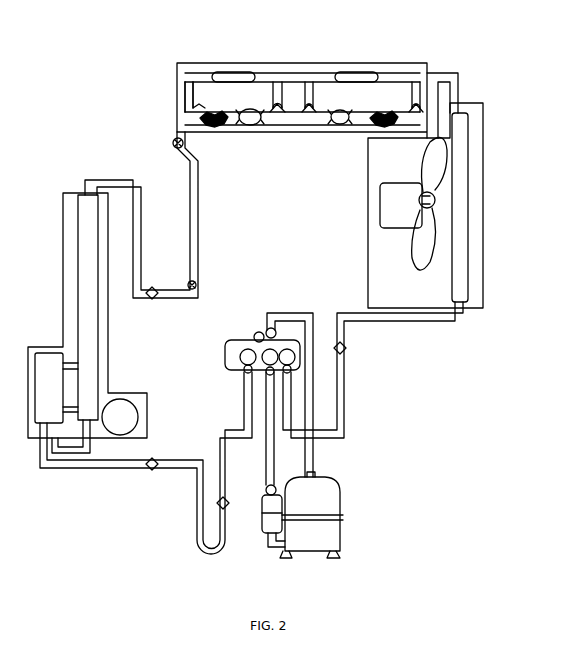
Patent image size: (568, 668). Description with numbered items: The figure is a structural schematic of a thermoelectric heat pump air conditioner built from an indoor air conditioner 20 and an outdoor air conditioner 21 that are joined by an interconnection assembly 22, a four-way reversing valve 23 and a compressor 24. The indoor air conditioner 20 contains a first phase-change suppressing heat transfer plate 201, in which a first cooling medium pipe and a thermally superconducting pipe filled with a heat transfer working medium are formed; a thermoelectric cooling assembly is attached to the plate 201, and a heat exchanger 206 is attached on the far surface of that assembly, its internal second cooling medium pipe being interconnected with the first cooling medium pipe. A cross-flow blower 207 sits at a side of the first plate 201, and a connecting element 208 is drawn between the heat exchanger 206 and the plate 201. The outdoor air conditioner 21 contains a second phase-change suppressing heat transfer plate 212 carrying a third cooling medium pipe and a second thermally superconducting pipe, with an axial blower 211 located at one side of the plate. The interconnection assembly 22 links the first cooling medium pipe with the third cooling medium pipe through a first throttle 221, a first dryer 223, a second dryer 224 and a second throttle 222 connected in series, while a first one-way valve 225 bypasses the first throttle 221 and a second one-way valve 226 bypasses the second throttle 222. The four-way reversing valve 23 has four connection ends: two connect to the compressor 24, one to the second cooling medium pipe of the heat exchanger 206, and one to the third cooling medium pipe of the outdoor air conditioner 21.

The indoor air conditioner 20 is at (63, 248).
The first phase-change suppressing heat transfer plate 201 is at (92, 268).
The heat exchanger 206 is at (45, 385).
The cross-flow blower 207 is at (120, 417).
The connecting pipe 208 is at (70, 388).
The outdoor air conditioner 21 is at (483, 182).
The axial blower 211 is at (400, 215).
The second phase-change suppressing heat transfer plate 212 is at (458, 213).
The interconnection assembly 22 is at (247, 63).
The first throttle 221 is at (205, 114).
The second throttle 222 is at (385, 114).
The first dryer 223 is at (250, 122).
The second dryer 224 is at (340, 111).
The first one-way valve 225 is at (213, 114).
The second one-way valve 226 is at (352, 82).
The four-way reversing valve 23 is at (233, 357).
The compressor 24 is at (318, 512).